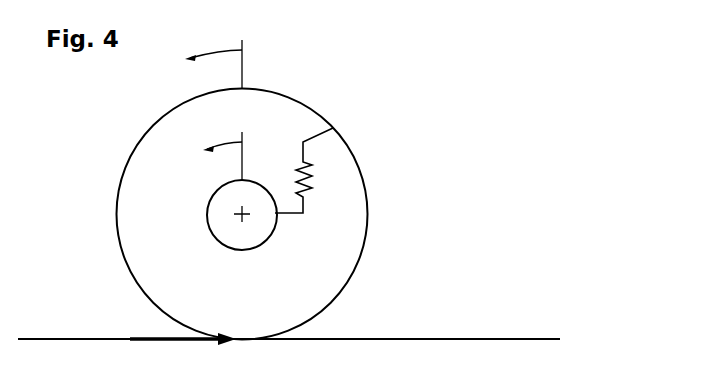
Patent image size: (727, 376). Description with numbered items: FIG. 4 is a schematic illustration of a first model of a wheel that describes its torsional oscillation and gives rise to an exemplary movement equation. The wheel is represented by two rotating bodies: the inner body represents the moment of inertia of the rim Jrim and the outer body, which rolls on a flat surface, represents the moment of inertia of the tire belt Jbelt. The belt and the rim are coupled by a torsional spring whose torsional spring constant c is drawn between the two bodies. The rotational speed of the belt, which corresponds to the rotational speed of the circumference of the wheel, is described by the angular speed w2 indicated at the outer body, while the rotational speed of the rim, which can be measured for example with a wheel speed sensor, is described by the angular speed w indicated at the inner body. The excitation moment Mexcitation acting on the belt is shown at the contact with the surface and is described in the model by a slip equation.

The moment of inertia of the tire belt Jbelt is at (348, 285).
The moment of inertia of the rim Jrim is at (242, 250).
The torsional spring constant c is at (304, 170).
The angular speed of the belt w2 is at (213, 55).
The angular speed of the rim w is at (222, 150).
The excitation moment Mexcitation is at (146, 338).